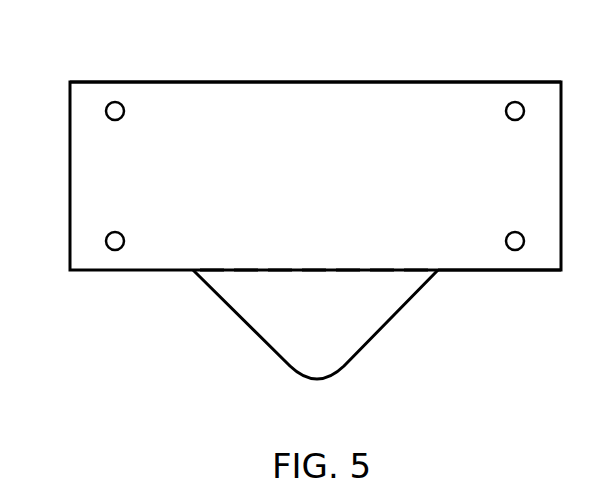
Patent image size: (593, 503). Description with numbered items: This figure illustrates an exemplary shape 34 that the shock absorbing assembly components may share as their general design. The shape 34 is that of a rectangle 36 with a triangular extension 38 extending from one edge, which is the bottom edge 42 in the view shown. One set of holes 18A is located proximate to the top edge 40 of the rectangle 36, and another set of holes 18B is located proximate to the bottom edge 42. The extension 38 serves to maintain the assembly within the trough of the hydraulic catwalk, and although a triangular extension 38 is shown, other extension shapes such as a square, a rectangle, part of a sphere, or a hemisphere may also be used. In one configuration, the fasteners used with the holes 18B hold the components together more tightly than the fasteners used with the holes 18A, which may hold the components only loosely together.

The exemplary shape 34 is at (105, 50).
The rectangle 36 is at (331, 178).
The triangular extension 38 is at (333, 326).
The top edge 40 is at (395, 85).
The bottom edge 42 is at (497, 272).
The holes 18A is at (123, 116).
The holes 18B is at (122, 235).